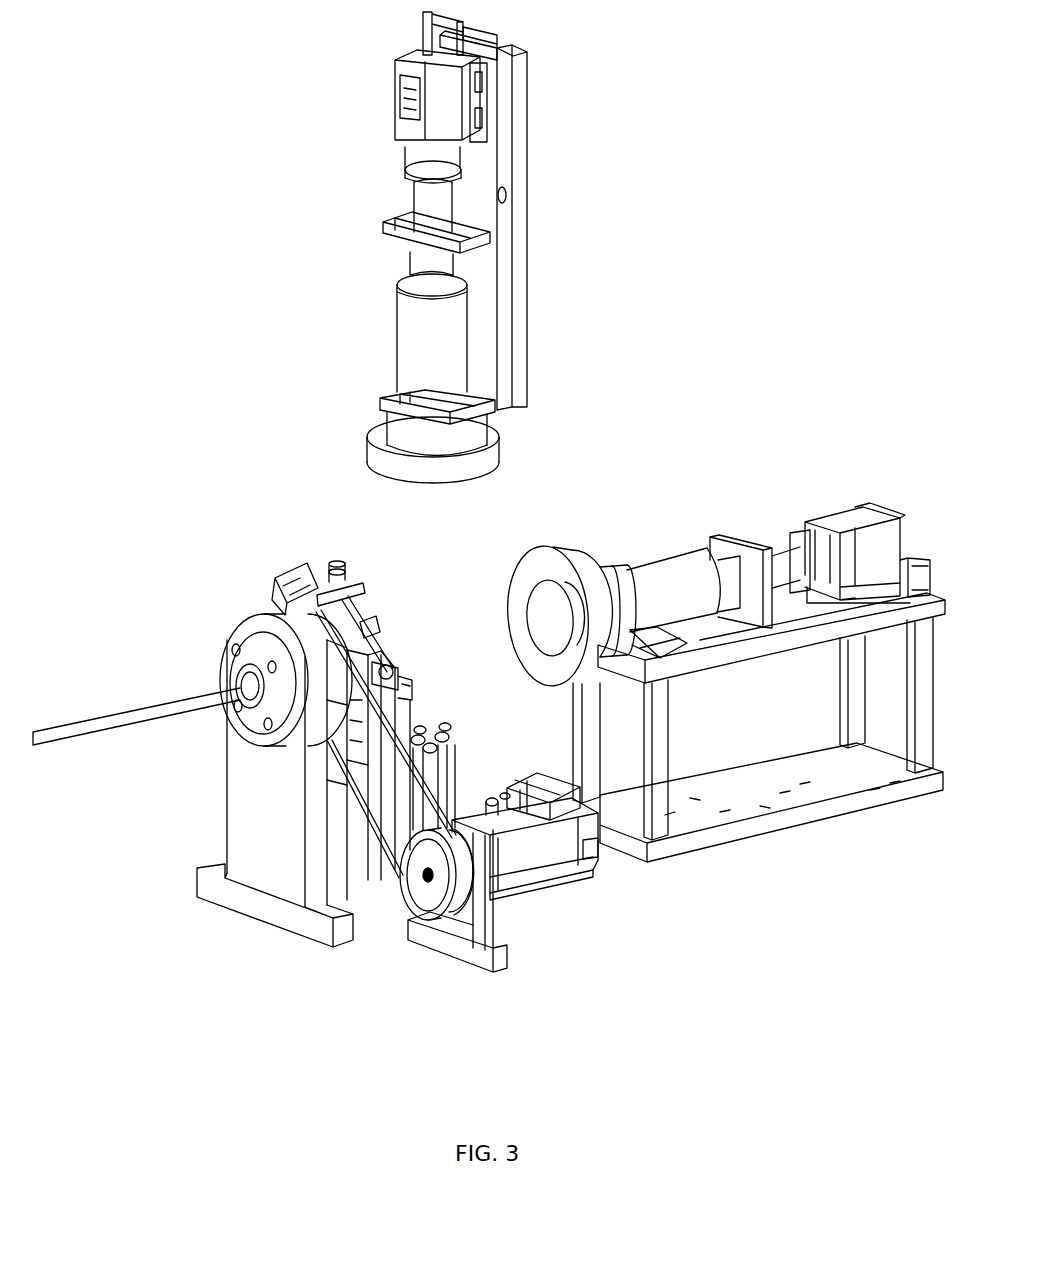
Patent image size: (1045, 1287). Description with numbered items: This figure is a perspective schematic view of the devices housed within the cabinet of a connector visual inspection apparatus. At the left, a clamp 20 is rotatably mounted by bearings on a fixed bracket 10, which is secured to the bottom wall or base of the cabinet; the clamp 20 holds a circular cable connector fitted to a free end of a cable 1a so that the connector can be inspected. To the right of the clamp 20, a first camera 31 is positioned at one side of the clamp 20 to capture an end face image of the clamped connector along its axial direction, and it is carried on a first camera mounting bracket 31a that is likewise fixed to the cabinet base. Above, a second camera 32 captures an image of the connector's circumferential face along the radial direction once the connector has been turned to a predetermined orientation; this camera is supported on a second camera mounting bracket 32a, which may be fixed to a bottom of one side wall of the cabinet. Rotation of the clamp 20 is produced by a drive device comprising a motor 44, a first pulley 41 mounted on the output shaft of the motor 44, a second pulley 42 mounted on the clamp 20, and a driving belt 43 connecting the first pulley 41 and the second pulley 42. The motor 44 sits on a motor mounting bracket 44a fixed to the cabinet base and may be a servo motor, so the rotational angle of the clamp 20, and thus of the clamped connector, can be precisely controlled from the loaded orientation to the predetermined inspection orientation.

The cable 1a is at (150, 700).
The fixed bracket 10 is at (248, 809).
The clamp 20 is at (385, 670).
The first camera 31 is at (659, 578).
The first camera mounting bracket 31a is at (773, 824).
The second camera 32 is at (420, 344).
The second camera mounting bracket 32a is at (525, 268).
The first pulley 41 is at (427, 918).
The second pulley 42 is at (335, 645).
The driving belt 43 is at (372, 845).
The motor 44 is at (528, 860).
The motor mounting bracket 44a is at (482, 918).